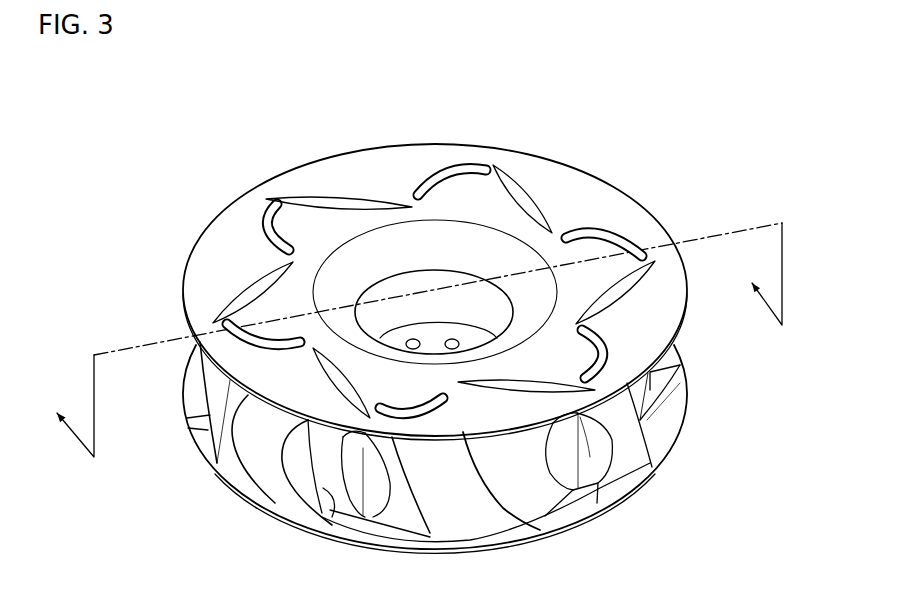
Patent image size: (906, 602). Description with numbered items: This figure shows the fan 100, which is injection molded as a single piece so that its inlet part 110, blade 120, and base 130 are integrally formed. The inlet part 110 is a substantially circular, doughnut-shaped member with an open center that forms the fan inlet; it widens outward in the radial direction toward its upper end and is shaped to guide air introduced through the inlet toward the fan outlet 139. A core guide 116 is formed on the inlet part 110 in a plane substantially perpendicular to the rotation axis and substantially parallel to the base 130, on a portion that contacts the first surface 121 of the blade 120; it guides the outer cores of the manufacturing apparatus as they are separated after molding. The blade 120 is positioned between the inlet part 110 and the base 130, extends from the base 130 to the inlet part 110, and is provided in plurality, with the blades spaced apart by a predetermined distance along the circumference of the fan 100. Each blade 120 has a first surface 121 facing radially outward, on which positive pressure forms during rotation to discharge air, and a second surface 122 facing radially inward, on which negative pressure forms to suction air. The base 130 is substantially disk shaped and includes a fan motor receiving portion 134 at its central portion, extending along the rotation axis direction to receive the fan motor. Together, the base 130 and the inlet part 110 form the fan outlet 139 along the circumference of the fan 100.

The fan 100 is at (309, 85).
The inlet part 110 is at (282, 519).
The core guide 116 is at (380, 523).
The blade 120 is at (443, 517).
The first surface 121 is at (327, 490).
The second surface 122 is at (216, 410).
The base 130 is at (598, 178).
The fan motor receiving portion 134 is at (396, 291).
The fan outlet 139 is at (273, 497).